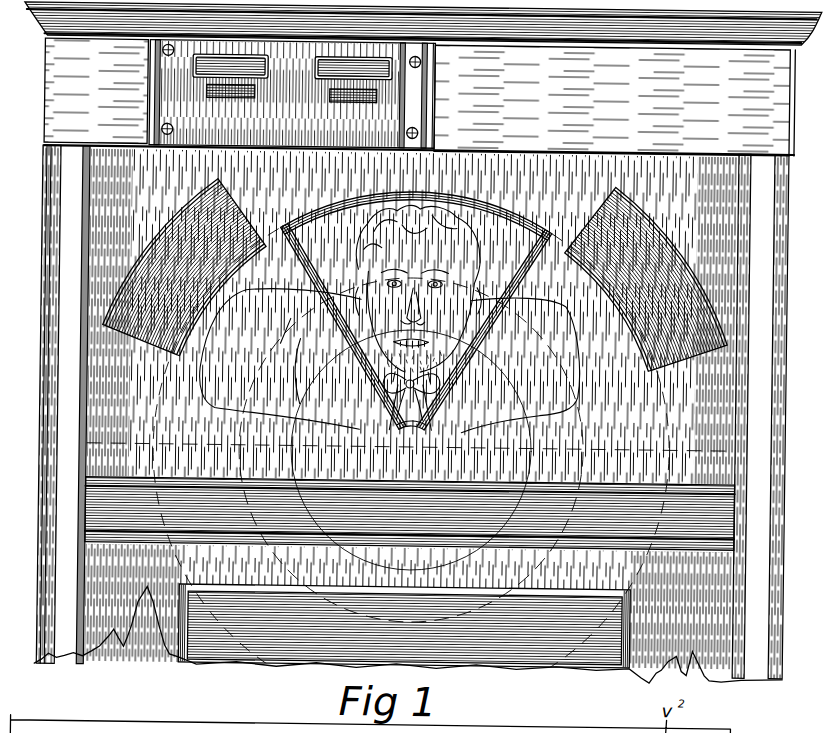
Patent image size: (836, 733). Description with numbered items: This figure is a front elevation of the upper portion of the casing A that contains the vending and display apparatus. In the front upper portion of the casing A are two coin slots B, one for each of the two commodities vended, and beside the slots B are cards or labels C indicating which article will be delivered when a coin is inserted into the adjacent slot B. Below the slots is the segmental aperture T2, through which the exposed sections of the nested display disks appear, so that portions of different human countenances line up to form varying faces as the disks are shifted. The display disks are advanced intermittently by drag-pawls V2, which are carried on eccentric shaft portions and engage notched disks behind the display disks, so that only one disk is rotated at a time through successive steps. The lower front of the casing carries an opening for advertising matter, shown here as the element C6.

The casing A is at (614, 100).
The coin slots B is at (251, 97).
The cards or labels C is at (313, 73).
The segmental aperture T2 is at (508, 216).
The drag-pawl V2 is at (644, 237).
The lower panel C6 is at (622, 640).